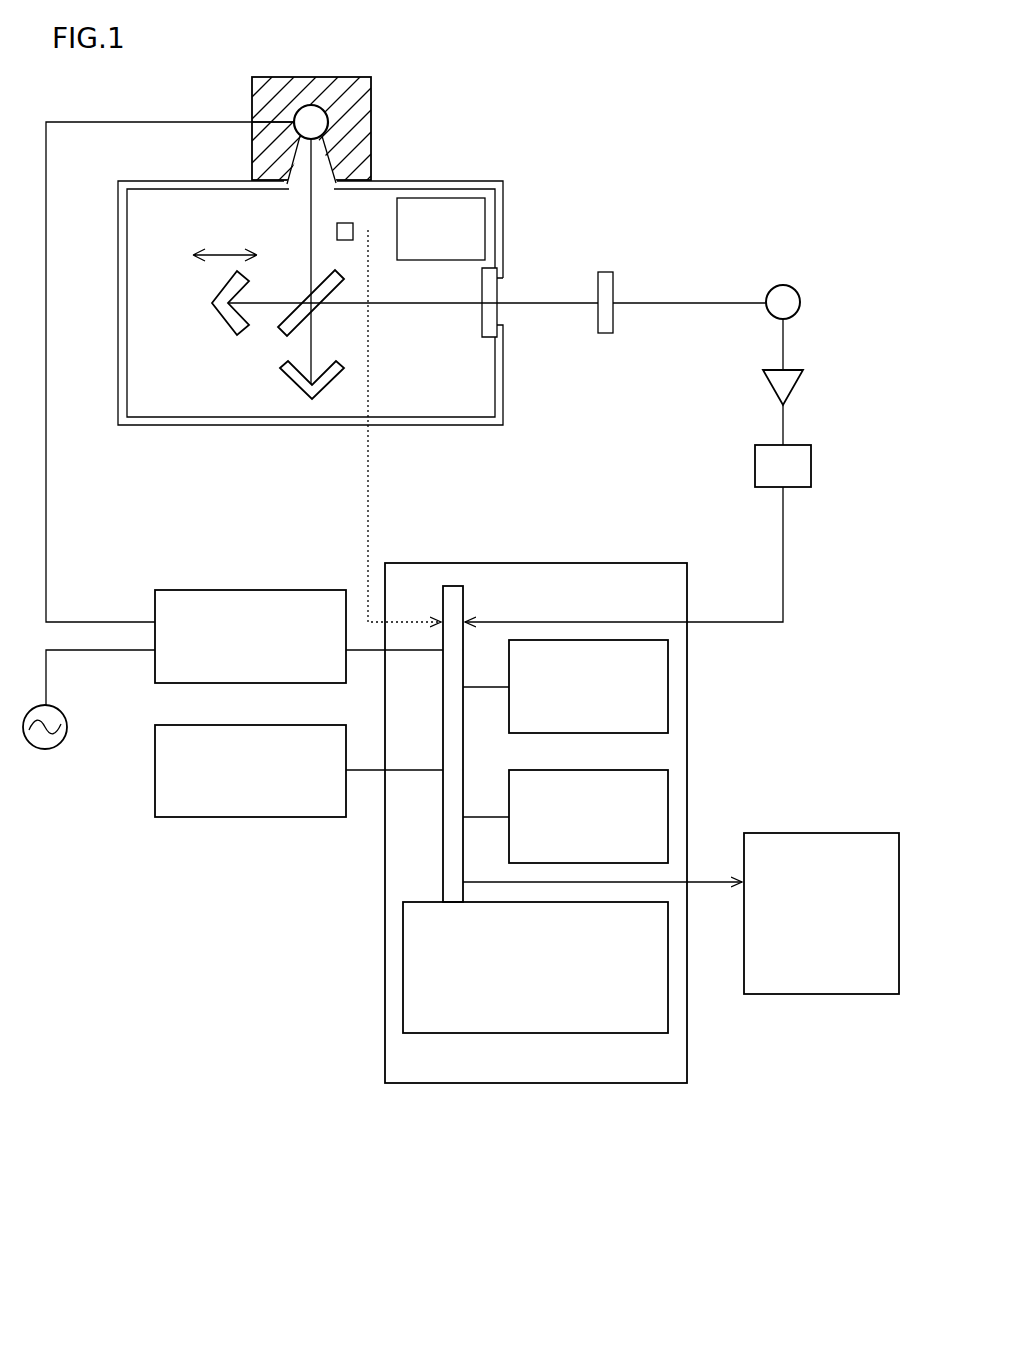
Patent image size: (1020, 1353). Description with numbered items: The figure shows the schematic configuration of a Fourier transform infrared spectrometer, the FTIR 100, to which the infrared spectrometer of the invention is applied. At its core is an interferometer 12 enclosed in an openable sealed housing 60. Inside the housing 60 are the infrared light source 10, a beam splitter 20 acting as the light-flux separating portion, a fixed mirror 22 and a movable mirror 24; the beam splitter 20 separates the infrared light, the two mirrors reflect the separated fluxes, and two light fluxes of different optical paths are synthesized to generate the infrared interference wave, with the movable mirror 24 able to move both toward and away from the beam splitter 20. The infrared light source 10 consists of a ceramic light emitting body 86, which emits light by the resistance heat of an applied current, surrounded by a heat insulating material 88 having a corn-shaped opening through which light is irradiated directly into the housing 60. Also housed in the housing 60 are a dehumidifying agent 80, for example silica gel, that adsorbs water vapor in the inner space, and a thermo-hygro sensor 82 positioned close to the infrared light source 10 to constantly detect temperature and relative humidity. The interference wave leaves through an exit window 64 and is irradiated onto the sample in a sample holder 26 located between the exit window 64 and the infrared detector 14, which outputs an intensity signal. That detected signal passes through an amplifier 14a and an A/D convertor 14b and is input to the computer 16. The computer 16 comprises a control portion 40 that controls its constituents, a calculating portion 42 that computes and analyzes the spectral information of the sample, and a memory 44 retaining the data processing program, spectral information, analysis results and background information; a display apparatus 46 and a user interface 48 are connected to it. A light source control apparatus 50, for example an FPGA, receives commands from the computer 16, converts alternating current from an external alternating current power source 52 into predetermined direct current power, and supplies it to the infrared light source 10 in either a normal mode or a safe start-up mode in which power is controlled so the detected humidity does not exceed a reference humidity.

The FTIR 100 is at (823, 139).
The infrared light source 10 is at (378, 78).
The ceramic light emitting body 86 is at (311, 118).
The heat insulating material 88 is at (352, 127).
The dehumidifying agent 80 is at (462, 198).
The thermo-hygro sensor 82 is at (348, 226).
The housing 60 is at (118, 218).
The interferometer 12 is at (430, 384).
The exit window 64 is at (502, 290).
The movable mirror 24 is at (218, 318).
The beam splitter 20 is at (320, 320).
The fixed mirror 22 is at (281, 382).
The sample holder 26 is at (605, 270).
The infrared detector 14 is at (770, 288).
The amplifier 14a is at (768, 385).
The A/D convertor 14b is at (755, 465).
The computer 16 is at (510, 1087).
The control portion 40 is at (565, 686).
The calculating portion 42 is at (565, 816).
The memory 44 is at (535, 967).
The display apparatus 46 is at (823, 899).
The user interface 48 is at (250, 818).
The light source control apparatus 50 is at (250, 590).
The alternating current power source 52 is at (46, 750).